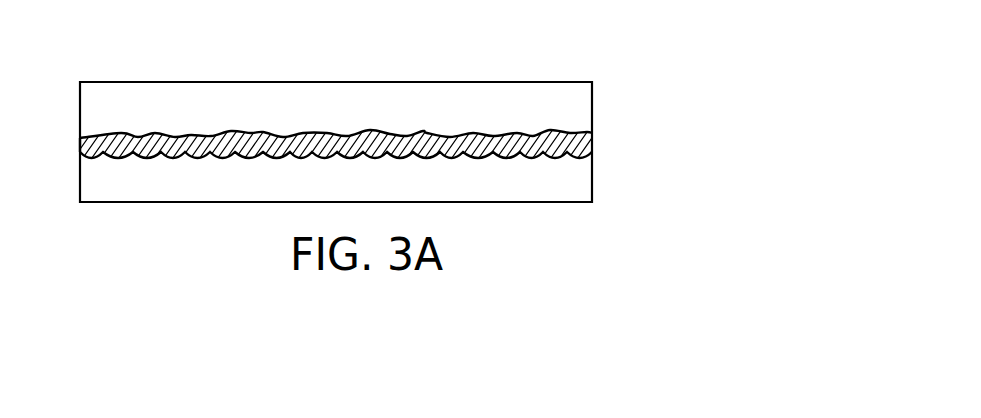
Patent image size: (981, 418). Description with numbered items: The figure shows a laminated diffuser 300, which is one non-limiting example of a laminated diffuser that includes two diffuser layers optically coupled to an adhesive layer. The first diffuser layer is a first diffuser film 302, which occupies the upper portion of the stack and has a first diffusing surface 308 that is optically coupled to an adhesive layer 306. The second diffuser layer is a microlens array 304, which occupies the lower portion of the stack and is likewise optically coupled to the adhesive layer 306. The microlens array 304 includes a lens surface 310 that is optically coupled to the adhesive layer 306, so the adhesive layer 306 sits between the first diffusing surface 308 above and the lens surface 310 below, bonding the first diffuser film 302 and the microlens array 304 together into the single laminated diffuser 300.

The laminated diffuser 300 is at (574, 40).
The first diffuser film 302 is at (587, 103).
The microlens array 304 is at (587, 188).
The adhesive layer 306 is at (86, 141).
The first diffusing surface 308 is at (339, 137).
The lens surface 310 is at (339, 157).